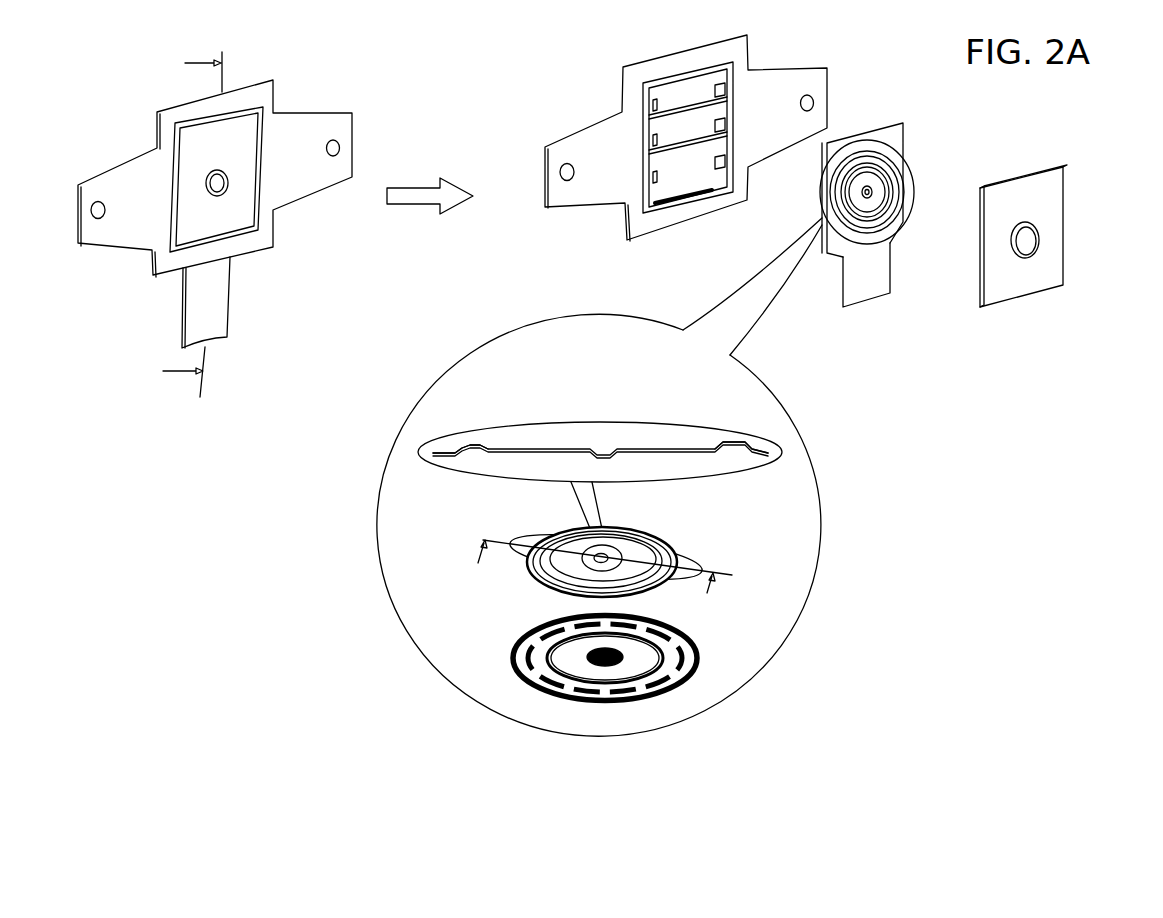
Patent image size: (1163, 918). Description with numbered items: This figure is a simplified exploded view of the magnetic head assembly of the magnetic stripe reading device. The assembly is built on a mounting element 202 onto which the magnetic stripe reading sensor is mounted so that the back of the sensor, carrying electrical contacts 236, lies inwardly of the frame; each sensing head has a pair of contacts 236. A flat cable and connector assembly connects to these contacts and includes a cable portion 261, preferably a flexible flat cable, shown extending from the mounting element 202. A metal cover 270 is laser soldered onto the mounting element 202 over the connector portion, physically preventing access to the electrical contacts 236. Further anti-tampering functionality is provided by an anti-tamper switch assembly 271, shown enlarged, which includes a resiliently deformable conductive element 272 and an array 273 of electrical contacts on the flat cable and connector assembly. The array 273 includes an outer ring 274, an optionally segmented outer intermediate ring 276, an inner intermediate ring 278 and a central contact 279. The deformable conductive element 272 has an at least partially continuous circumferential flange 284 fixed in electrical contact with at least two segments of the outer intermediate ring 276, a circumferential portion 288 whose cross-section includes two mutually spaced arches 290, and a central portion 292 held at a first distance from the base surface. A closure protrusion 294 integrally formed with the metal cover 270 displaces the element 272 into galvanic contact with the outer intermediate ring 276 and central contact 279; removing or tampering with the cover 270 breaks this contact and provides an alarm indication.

The mounting element 202 is at (327, 98).
The electrical contacts 236 is at (713, 165).
The cable portion 261 is at (182, 320).
The metal cover 270 is at (1053, 190).
The anti-tamper switch assembly 271 is at (895, 162).
The resiliently deformable conductive element 272 is at (653, 445).
The array of electrical contacts 273 is at (503, 690).
The outer ring 274 is at (680, 688).
The outer intermediate ring 276 is at (680, 658).
The inner intermediate ring 278 is at (567, 680).
The central contact 279 is at (608, 665).
The circumferential flange 284 is at (766, 439).
The circumferential portion 288 is at (727, 443).
The arches 290 is at (463, 447).
The central portion 292 is at (605, 555).
The closure protrusion 294 is at (1017, 243).